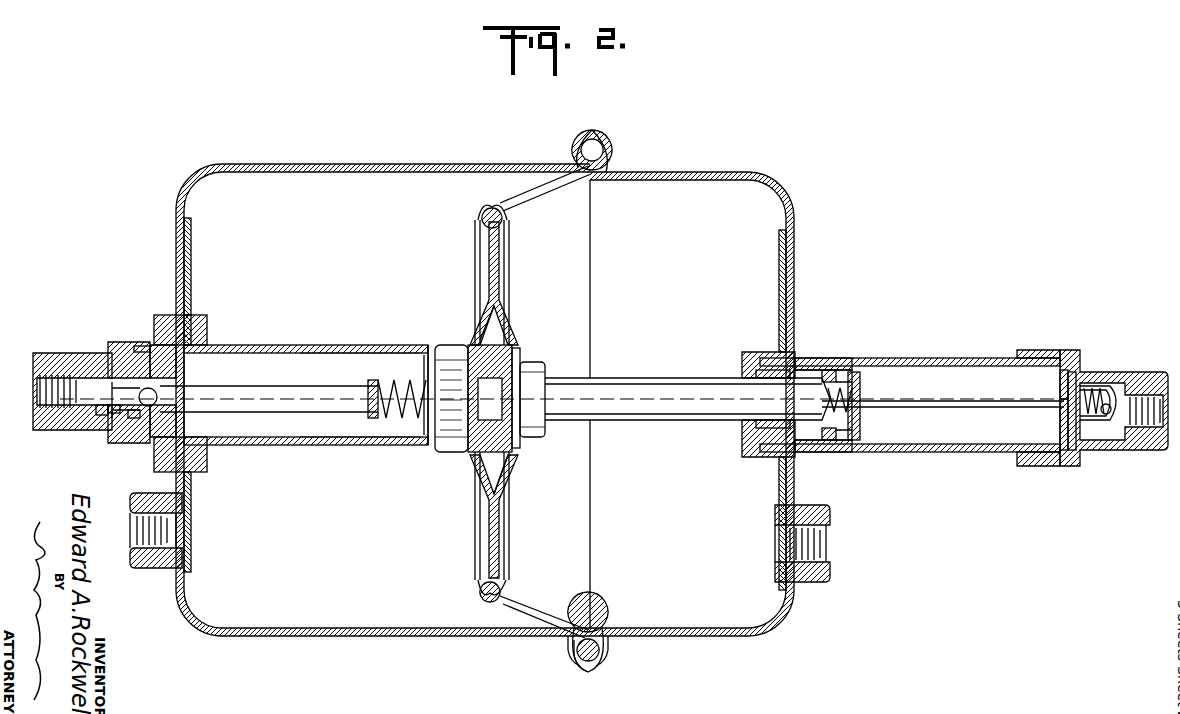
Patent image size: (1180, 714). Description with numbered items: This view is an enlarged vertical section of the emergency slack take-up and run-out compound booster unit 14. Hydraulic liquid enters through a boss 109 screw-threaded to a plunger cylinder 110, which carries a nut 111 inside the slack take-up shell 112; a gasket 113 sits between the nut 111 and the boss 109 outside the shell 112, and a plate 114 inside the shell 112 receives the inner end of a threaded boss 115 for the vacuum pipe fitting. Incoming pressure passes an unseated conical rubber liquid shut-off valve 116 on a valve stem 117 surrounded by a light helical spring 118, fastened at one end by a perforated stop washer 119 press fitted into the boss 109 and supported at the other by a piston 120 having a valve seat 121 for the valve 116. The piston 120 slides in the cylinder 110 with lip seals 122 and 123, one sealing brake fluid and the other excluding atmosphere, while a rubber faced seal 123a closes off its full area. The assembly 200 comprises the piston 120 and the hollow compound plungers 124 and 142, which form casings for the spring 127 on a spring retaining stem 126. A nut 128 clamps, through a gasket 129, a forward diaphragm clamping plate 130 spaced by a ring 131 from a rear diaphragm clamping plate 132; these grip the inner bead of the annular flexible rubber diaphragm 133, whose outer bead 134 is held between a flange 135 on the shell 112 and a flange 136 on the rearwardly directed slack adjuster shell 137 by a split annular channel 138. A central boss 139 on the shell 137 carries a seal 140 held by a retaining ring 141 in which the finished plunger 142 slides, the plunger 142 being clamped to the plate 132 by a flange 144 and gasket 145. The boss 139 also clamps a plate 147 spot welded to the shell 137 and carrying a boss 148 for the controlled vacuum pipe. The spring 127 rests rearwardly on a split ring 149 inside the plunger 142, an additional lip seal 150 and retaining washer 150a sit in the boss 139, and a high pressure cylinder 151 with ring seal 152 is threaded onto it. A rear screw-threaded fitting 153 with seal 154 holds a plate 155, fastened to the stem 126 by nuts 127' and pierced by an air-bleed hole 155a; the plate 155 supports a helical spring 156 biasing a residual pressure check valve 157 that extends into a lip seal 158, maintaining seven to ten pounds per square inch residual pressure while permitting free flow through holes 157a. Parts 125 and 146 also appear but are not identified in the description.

The slack take-up unit 14 is at (449, 131).
The boss 109 is at (52, 356).
The plunger cylinder 110 is at (292, 345).
The nut 111 is at (192, 335).
The slack take-up shell 112 is at (312, 164).
The gasket 113 is at (180, 320).
The plate 114 is at (191, 486).
The boss 115 is at (142, 568).
The liquid shut-off valve 116 is at (158, 397).
The valve stem 117 is at (118, 348).
The light helical spring 118 is at (112, 428).
The perforated stop washer 119 is at (80, 426).
The piston 120 is at (166, 452).
The valve seat 121 is at (136, 436).
The lip seal 122 is at (156, 348).
The lip seal 123 is at (204, 338).
The rubber faced seal 123a is at (128, 342).
The plunger 124 is at (292, 412).
The spring seat 125 is at (372, 420).
The spring retaining stem 126 is at (406, 357).
The spring 127 is at (402, 428).
The nuts 127' is at (1113, 358).
The nut 128 is at (448, 454).
The gasket 129 is at (480, 456).
The forward diaphragm clamping plate 130 is at (480, 250).
The ring 131 is at (504, 342).
The rear diaphragm clamping plate 132 is at (497, 252).
The annular flexible rubber diaphragm 133 is at (518, 197).
The bead 134 is at (590, 668).
The flange 135 is at (566, 648).
The flange 136 is at (610, 649).
The slack adjuster shell 137 is at (698, 172).
The split annular channel 138 is at (598, 134).
The central boss 139 is at (764, 442).
The seal 140 is at (770, 354).
The retaining ring 141 is at (748, 372).
The cylindrical plunger 142 is at (628, 384).
The flange 144 is at (514, 452).
The gasket 145 is at (536, 440).
The flange 146 is at (520, 390).
The plate 147 is at (779, 498).
The boss 148 is at (808, 584).
The split ring 149 is at (846, 406).
The lip seal 150 is at (832, 368).
The retaining washer 150a is at (856, 374).
The high pressure cylinder 151 is at (942, 356).
The ring seal 152 is at (812, 356).
The screw-threaded fitting 153 is at (1072, 352).
The seal 154 is at (1057, 356).
The plate 155 is at (1060, 428).
The hole 155a is at (1060, 378).
The helical spring 156 is at (1070, 452).
The residual pressure check valve 157 is at (1152, 432).
The holes 157a is at (1112, 386).
The lip seal 158 is at (1110, 440).
The assembly 200 is at (296, 380).